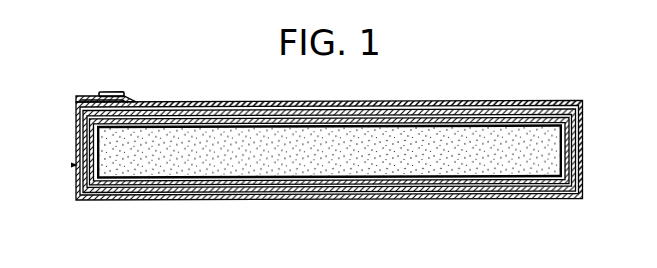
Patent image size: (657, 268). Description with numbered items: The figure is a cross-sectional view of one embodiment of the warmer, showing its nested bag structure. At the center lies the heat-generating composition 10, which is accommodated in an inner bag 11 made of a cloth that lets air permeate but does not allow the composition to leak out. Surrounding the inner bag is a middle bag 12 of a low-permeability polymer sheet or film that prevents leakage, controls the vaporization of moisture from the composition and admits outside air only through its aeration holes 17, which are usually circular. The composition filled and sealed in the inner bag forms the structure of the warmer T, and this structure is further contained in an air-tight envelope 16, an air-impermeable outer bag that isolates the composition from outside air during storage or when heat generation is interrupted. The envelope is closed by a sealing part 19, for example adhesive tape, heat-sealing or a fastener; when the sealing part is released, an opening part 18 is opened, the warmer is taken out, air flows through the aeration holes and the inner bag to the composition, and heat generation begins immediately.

The heat-generating composition 10 is at (518, 163).
The inner bag 11 is at (565, 164).
The middle bag 12 is at (580, 133).
The air-tight envelope 16 is at (552, 100).
The aeration holes 17 is at (495, 110).
The opening part 18 is at (75, 121).
The sealing part 19 is at (116, 92).
The warmer T is at (73, 165).